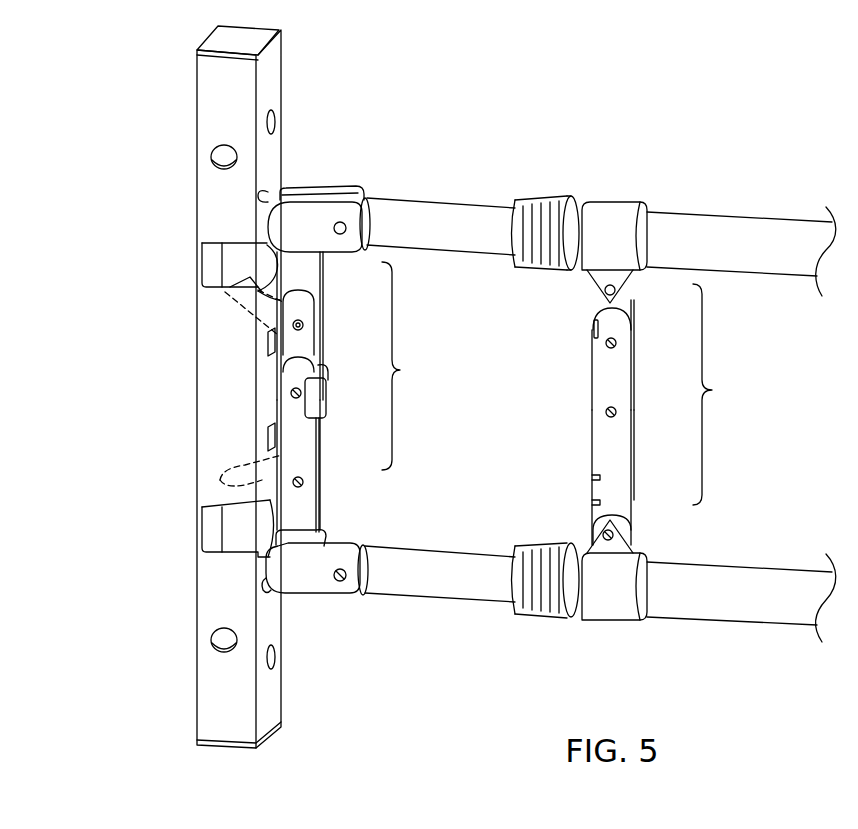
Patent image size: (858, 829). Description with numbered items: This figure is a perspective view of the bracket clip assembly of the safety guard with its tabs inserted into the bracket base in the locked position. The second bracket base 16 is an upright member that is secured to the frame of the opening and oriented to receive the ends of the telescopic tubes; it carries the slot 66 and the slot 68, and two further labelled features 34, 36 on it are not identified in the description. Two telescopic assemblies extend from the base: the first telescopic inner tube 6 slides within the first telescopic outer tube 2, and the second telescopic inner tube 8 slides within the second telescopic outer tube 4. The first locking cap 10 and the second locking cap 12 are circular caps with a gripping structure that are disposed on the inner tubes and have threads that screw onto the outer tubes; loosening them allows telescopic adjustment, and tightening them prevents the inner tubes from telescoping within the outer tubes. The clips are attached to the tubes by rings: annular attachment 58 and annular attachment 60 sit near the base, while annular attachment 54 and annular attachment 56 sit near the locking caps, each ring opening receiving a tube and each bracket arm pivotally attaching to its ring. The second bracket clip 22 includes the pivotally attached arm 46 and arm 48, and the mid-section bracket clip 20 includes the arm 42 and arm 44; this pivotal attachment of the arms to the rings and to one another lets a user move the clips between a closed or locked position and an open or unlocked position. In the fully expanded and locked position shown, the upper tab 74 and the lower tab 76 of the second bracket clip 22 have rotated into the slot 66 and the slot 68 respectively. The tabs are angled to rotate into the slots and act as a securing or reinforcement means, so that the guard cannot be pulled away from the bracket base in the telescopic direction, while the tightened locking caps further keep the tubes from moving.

The first telescopic outer tube 2 is at (729, 230).
The second telescopic outer tube 4 is at (745, 598).
The first telescopic inner tube 6 is at (432, 222).
The second telescopic inner tube 8 is at (427, 582).
The first locking cap 10 is at (540, 217).
The second locking cap 12 is at (540, 600).
The second bracket base 16 is at (232, 98).
The mid-section bracket clip 20 is at (712, 390).
The second bracket clip 22 is at (400, 370).
The upper mounting hook 34 is at (240, 255).
The lower mounting hook 36 is at (248, 528).
The bracket arm 42 is at (630, 312).
The bracket arm 44 is at (613, 463).
The bracket arm 46 is at (295, 275).
The bracket arm 48 is at (297, 448).
The annular attachment 54 is at (606, 222).
The annular attachment 56 is at (606, 605).
The annular attachment 58 is at (345, 203).
The annular attachment 60 is at (350, 595).
The slot 66 is at (268, 345).
The slot 68 is at (268, 440).
The upper tab 74 is at (243, 263).
The lower tab 76 is at (218, 476).